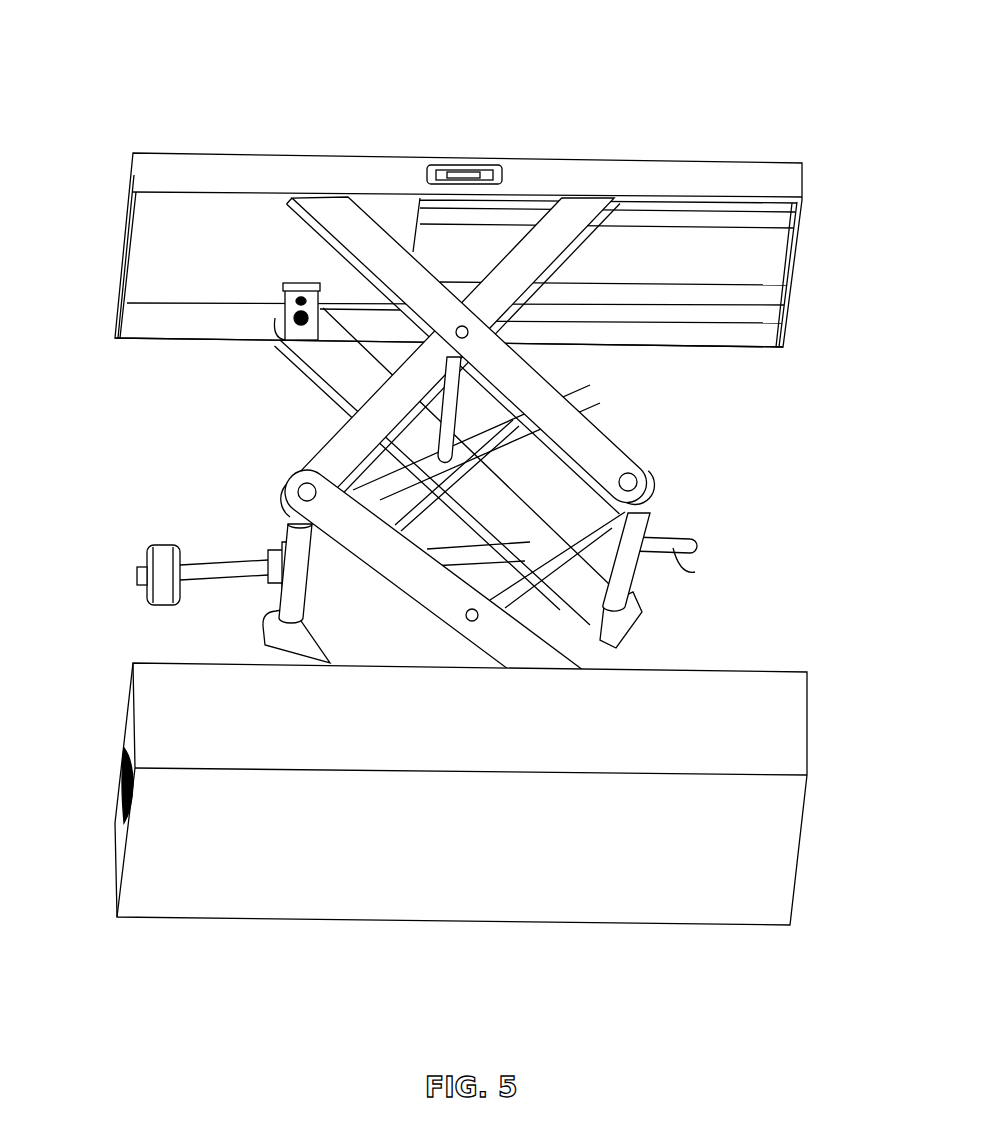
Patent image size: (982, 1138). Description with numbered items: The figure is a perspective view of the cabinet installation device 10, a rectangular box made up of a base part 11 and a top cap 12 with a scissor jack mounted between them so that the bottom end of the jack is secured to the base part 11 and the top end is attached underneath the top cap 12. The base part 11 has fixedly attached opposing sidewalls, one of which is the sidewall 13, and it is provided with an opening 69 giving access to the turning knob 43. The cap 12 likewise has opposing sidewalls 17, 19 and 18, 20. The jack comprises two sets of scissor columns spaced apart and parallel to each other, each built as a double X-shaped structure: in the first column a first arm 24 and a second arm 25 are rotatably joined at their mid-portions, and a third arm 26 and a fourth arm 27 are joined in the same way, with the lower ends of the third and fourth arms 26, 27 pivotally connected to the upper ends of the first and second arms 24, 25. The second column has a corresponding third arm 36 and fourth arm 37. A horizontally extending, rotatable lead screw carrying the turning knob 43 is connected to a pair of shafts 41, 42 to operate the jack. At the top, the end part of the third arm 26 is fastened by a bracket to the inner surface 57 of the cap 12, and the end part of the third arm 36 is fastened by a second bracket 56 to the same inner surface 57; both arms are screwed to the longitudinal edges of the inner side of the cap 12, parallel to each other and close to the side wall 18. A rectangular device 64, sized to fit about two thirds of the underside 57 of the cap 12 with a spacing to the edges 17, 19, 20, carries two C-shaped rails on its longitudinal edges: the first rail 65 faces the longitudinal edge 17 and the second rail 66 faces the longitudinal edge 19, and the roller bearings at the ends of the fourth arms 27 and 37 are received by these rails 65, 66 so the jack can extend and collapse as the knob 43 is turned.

The cabinet installation device 10 is at (736, 78).
The base part 11 is at (775, 850).
The top cap 12 is at (160, 152).
The sidewall 13 is at (775, 723).
The sidewall 17 is at (540, 157).
The side wall 18 is at (122, 247).
The sidewall 19 is at (758, 347).
The sidewall 20 is at (790, 305).
The first arm 24 is at (287, 495).
The second arm 25 is at (580, 523).
The third arm 26 is at (593, 443).
The fourth arm 27 is at (338, 452).
The third arm 36 is at (505, 503).
The fourth arm 37 is at (558, 352).
The shaft 41 is at (290, 597).
The shaft 42 is at (620, 580).
The turning knob 43 is at (163, 560).
The second bracket 56 is at (292, 302).
The inner surface 57 is at (172, 293).
The rectangular device 64 is at (763, 255).
The first rail 65 is at (695, 218).
The second rail 66 is at (678, 313).
The opening 69 is at (122, 778).